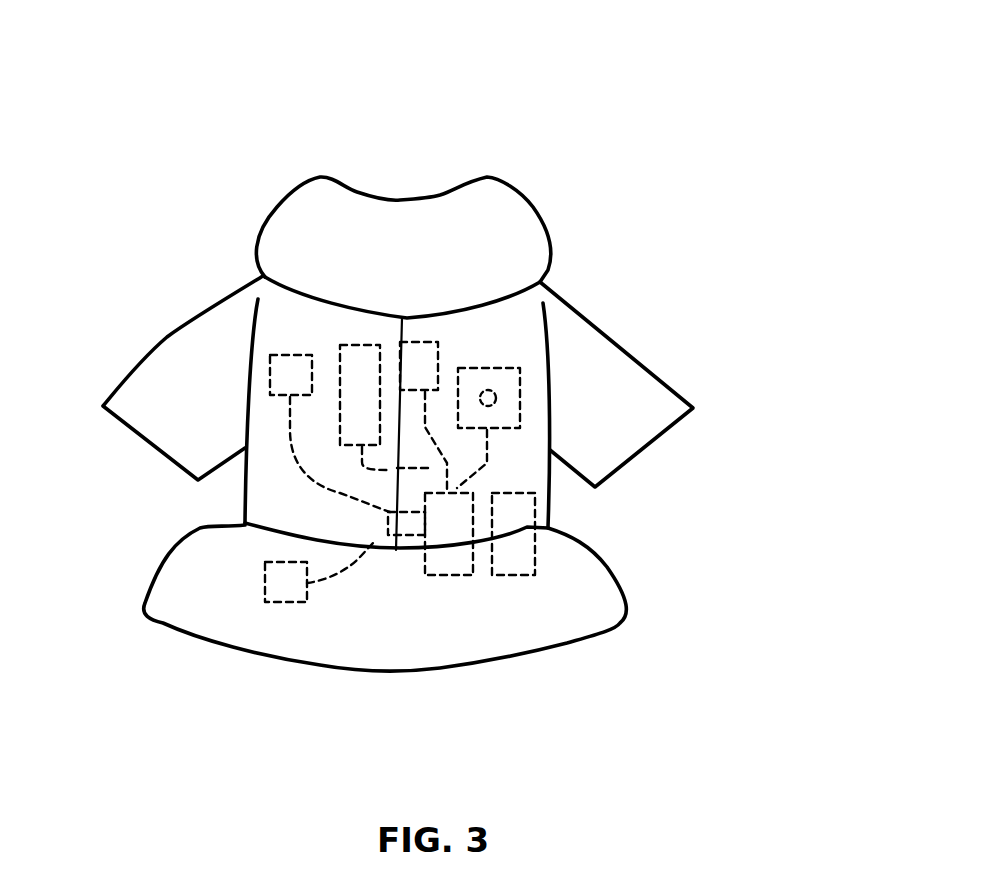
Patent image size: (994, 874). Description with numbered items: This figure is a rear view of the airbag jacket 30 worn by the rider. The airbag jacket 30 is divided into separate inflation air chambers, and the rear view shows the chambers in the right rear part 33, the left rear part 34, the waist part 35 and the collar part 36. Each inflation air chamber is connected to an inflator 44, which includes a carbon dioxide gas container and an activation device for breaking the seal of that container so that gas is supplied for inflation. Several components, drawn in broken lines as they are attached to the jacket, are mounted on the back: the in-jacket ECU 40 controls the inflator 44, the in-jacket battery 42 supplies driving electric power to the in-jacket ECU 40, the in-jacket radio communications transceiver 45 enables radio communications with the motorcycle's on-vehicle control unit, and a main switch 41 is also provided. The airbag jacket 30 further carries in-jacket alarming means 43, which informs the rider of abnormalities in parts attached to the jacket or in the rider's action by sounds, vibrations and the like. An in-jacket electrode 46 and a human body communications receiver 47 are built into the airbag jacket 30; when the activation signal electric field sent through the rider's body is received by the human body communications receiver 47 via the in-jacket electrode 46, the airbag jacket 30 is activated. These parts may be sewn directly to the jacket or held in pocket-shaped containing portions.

The airbag jacket 30 is at (466, 369).
The right rear part 33 is at (533, 480).
The left rear part 34 is at (262, 478).
The waist part 35 is at (323, 623).
The collar part 36 is at (490, 223).
The in-jacket ECU 40 is at (442, 575).
The main switch 41 is at (490, 368).
The in-jacket battery 42 is at (260, 581).
The in-jacket alarming means 43 is at (270, 373).
The inflator 44 is at (347, 348).
The in-jacket radio communications transceiver 45 is at (517, 575).
The in-jacket electrode 46 is at (321, 305).
The human body communications receiver 47 is at (430, 342).